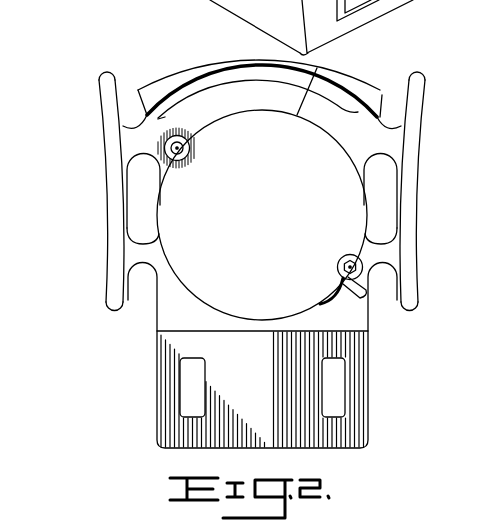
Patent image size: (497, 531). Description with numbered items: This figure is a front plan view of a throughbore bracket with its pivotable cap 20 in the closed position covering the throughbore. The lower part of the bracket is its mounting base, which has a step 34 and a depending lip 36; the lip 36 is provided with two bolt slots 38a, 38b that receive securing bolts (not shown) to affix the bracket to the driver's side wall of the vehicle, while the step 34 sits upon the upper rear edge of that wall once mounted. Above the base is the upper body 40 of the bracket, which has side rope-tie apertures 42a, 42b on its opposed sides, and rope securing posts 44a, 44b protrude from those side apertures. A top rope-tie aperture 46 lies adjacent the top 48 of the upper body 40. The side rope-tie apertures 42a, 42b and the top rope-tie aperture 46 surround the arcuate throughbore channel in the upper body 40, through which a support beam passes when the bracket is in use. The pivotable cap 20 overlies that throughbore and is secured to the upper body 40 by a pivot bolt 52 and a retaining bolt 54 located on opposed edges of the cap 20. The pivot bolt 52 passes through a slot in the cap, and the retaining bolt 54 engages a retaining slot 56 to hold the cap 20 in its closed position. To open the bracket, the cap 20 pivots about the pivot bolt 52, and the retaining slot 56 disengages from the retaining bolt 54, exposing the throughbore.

The pivotable cap 20 is at (270, 203).
The step 34 is at (356, 327).
The depending lip 36 is at (358, 376).
The bolt slot 38a is at (192, 395).
The bolt slot 38b is at (336, 403).
The upper body 40 is at (382, 96).
The side rope-tie aperture 42a is at (140, 213).
The side rope-tie aperture 42b is at (383, 193).
The rope securing post 44a is at (114, 145).
The rope securing post 44b is at (421, 106).
The top rope-tie aperture 46 is at (222, 101).
The top 48 is at (318, 70).
The pivot bolt 52 is at (191, 150).
The retaining bolt 54 is at (342, 257).
The retaining slot 56 is at (338, 290).